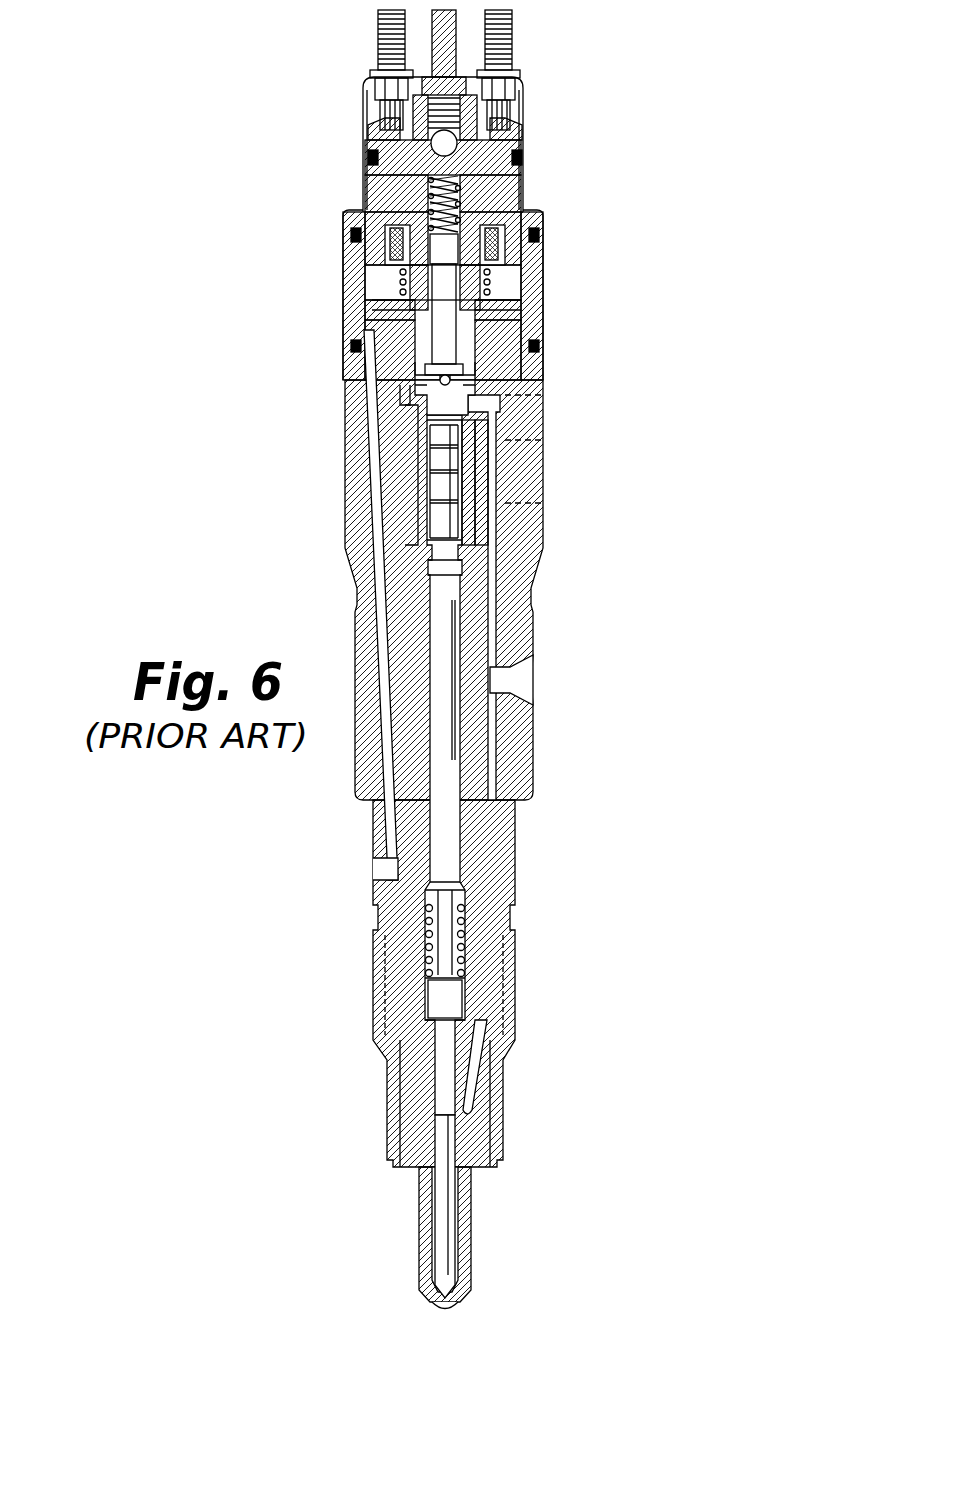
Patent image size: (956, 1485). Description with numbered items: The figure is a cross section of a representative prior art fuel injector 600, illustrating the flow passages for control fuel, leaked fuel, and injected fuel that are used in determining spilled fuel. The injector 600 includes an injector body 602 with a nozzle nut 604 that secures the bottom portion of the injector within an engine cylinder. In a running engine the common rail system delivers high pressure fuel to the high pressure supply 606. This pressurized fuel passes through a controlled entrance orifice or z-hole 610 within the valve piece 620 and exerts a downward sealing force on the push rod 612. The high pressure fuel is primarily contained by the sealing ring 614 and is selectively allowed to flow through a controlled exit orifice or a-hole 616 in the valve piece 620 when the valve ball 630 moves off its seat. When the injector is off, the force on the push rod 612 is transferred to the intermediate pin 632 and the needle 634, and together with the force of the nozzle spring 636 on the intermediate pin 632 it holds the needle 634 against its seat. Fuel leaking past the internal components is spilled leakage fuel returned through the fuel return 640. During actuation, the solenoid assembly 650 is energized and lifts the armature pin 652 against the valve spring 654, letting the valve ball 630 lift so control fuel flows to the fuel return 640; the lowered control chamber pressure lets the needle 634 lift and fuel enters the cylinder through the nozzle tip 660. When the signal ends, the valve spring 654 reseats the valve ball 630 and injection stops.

The injector 600 is at (618, 133).
The injector body 602 is at (510, 775).
The nozzle nut 604 is at (387, 1086).
The high pressure supply 606 is at (580, 675).
The z-hole 610 is at (464, 438).
The push rod 612 is at (424, 520).
The sealing ring 614 is at (412, 456).
The a-hole 616 is at (452, 389).
The valve piece 620 is at (482, 375).
The valve ball 630 is at (440, 373).
The intermediate pin 632 is at (430, 999).
The needle 634 is at (436, 1146).
The nozzle spring 636 is at (465, 912).
The fuel return 640 is at (370, 864).
The solenoid assembly 650 is at (354, 128).
The armature pin 652 is at (448, 346).
The valve spring 654 is at (420, 203).
The nozzle tip 660 is at (458, 1308).